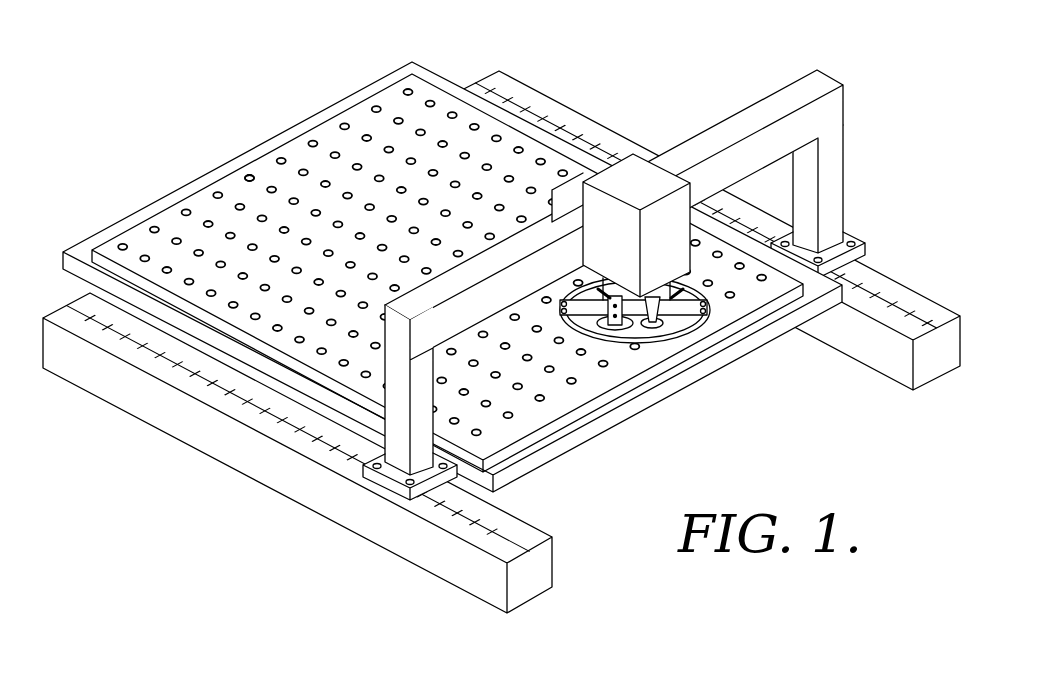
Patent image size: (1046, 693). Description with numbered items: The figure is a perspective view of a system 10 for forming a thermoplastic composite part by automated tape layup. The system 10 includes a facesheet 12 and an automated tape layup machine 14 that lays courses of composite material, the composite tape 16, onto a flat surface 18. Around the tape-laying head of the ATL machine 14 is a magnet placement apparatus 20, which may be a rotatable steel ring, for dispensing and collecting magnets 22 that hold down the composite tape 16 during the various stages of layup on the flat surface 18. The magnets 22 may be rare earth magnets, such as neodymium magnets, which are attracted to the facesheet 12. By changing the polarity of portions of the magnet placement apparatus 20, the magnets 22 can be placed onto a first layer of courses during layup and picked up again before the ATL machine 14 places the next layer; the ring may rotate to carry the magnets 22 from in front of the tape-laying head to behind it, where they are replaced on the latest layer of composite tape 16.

The system 10 is at (501, 311).
The facesheet 12 is at (501, 329).
The automated tape layup (ATL) machine 14 is at (660, 178).
The composite tape 16 is at (365, 108).
The flat surface 18 is at (642, 398).
The magnet placement apparatus 20 is at (694, 331).
The magnets 22 is at (247, 176).